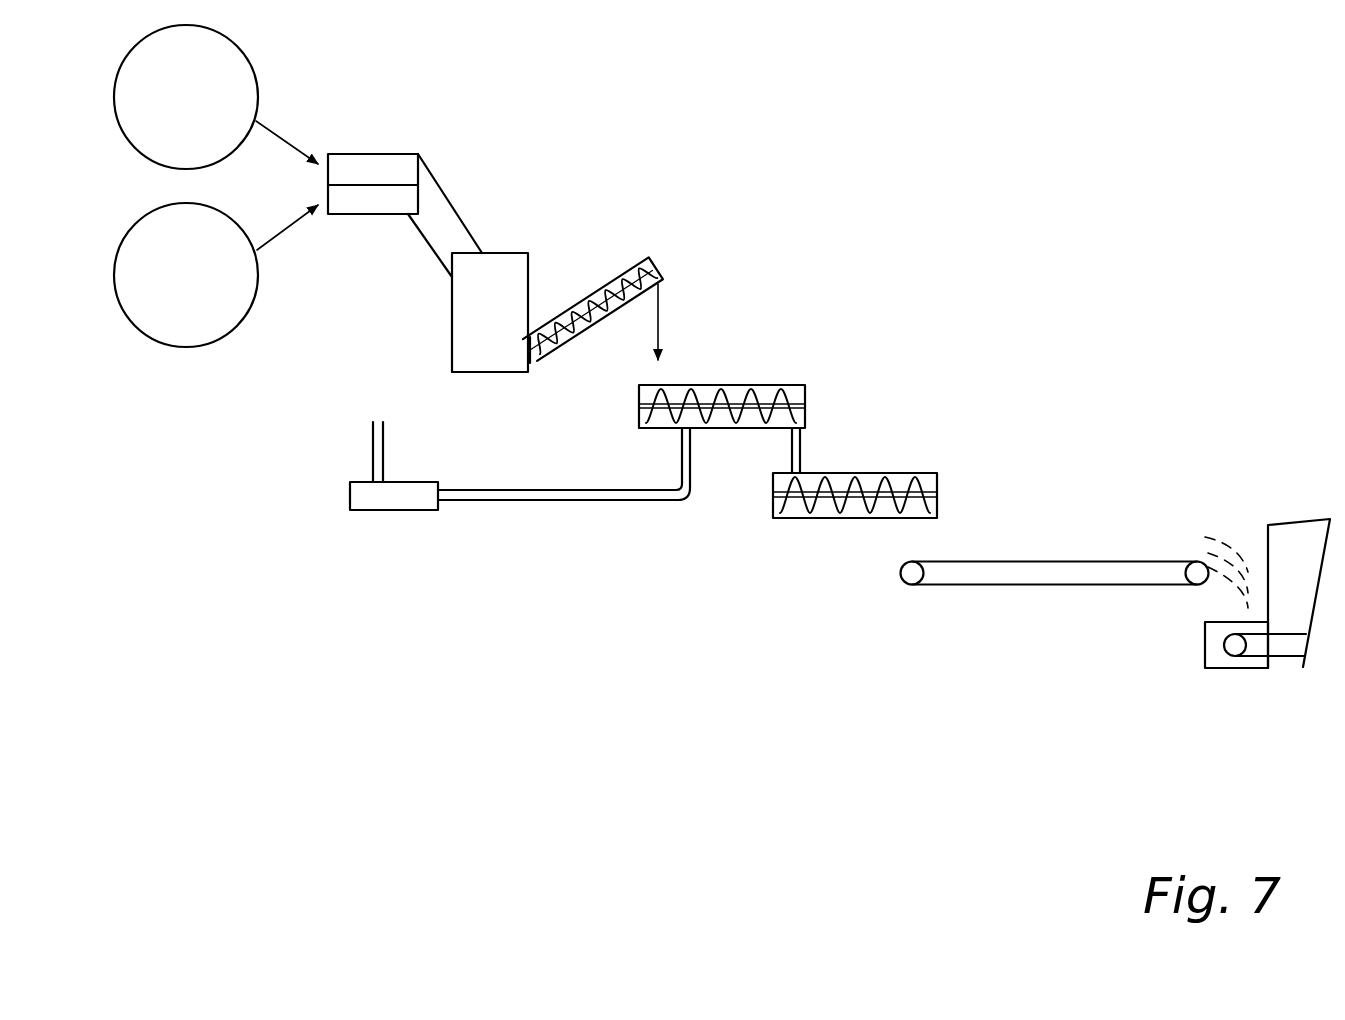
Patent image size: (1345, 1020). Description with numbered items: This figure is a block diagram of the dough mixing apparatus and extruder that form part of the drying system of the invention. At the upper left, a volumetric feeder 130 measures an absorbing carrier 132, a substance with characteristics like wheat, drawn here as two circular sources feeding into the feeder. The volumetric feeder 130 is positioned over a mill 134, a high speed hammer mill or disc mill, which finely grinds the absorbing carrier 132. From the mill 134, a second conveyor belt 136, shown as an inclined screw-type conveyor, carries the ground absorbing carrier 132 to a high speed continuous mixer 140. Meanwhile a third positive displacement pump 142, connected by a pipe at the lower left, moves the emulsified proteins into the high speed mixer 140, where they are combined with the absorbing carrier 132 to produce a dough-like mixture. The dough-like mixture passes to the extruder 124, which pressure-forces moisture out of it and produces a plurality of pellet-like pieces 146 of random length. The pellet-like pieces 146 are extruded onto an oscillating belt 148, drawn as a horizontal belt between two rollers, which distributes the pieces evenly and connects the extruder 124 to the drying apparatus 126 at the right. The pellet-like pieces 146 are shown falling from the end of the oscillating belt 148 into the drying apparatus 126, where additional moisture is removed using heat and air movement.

The extruder 124 is at (863, 473).
The drying apparatus 126 is at (1302, 498).
The volumetric feeder 130 is at (383, 154).
The absorbing carrier 132 is at (212, 344).
The mill 134 is at (508, 253).
The second conveyor belt 136 is at (597, 286).
The high speed continuous mixer 140 is at (722, 385).
The third positive displacement pump 142 is at (402, 510).
The pellet-like pieces 146 is at (1210, 538).
The oscillating belt 148 is at (987, 562).